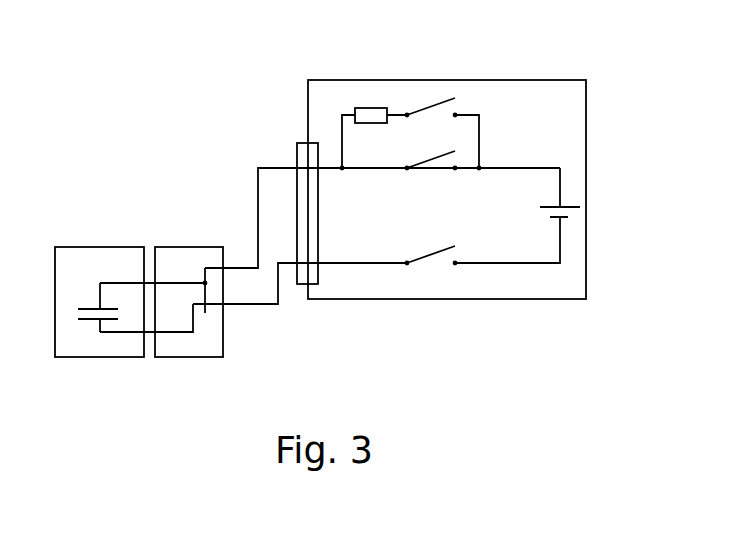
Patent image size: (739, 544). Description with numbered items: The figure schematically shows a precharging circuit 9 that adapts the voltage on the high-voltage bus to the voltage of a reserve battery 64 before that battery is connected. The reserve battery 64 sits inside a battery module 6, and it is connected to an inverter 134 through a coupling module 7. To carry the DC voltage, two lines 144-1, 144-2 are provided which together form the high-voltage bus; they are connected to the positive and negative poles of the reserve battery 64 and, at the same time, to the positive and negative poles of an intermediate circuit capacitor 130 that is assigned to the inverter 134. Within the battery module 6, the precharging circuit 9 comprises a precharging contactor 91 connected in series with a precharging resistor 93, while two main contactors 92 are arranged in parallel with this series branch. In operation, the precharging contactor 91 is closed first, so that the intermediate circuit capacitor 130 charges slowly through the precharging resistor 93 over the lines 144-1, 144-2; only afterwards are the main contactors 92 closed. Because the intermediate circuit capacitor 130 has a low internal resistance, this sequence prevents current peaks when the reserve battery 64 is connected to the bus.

The precharging circuit 9 is at (117, 88).
The inverter 134 is at (100, 247).
The intermediate circuit capacitor 130 is at (83, 307).
The coupling module 7 is at (185, 247).
The first line 144-1 is at (275, 167).
The second line 144-2 is at (258, 306).
The battery module 6 is at (586, 240).
The precharging resistor 93 is at (361, 108).
The precharging contactor 91 is at (428, 106).
The main contactors 92 is at (448, 247).
The reserve battery 64 is at (574, 208).